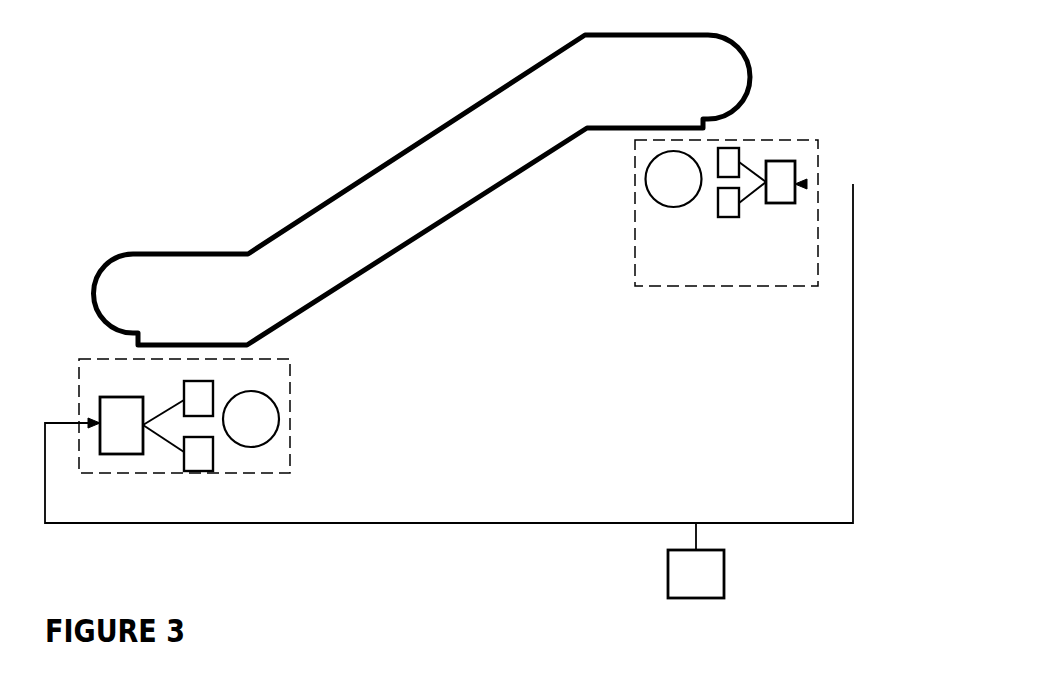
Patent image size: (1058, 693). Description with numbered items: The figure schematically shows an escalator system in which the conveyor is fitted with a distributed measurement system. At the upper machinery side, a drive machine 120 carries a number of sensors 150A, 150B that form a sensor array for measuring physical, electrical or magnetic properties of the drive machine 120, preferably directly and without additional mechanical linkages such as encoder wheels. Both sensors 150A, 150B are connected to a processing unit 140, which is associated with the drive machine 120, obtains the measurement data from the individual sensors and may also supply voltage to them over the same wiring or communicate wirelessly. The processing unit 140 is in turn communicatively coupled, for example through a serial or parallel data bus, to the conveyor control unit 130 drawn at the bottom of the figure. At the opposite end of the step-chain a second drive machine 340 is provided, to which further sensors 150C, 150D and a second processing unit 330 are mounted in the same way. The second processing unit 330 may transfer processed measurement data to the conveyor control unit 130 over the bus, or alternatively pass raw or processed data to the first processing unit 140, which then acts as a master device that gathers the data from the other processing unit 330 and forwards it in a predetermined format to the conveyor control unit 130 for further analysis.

The drive machine 120 is at (645, 186).
The conveyor control unit 130 is at (724, 580).
The processing unit 140 is at (788, 160).
The sensor 150A is at (729, 147).
The sensor 150B is at (727, 219).
The further sensor 150C is at (213, 381).
The further sensor 150D is at (202, 472).
The second processing unit 330 is at (112, 455).
The second drive machine 340 is at (280, 421).